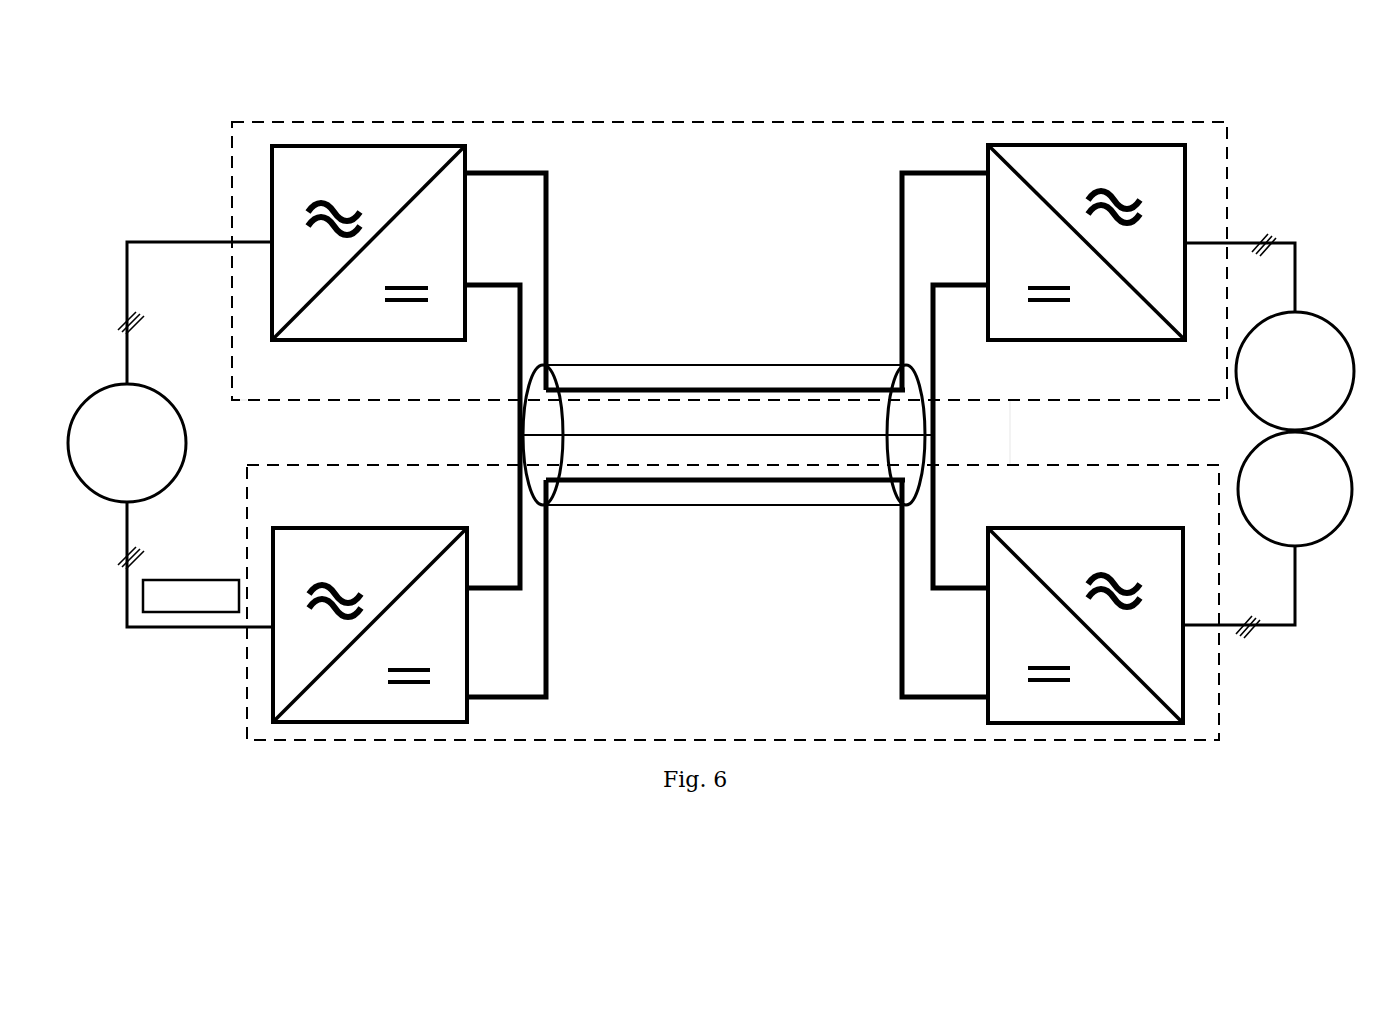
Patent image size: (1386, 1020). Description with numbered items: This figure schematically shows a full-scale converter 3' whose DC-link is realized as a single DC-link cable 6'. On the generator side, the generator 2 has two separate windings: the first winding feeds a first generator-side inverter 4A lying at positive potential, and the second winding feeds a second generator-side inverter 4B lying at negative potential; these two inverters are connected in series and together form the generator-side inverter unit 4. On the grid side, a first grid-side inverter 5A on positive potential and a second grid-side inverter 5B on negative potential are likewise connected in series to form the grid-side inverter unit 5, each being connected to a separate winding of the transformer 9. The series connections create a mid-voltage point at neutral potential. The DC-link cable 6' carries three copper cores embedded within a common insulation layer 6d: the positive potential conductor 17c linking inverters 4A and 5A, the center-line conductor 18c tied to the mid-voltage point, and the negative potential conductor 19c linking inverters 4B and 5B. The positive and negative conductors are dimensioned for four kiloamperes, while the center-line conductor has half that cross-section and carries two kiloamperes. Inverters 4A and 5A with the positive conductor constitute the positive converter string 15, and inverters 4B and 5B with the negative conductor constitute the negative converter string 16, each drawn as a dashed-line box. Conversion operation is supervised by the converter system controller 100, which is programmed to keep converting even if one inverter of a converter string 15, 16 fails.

The generator 2 is at (86, 484).
The full-scale converter 3' is at (729, 89).
The generator-side inverter unit 4 is at (403, 402).
The first generator-side inverter 4A is at (272, 178).
The second generator-side inverter 4B is at (273, 668).
The grid-side inverter unit 5 is at (1011, 402).
The first grid-side inverter 5A is at (1185, 174).
The second grid-side inverter 5B is at (1183, 672).
The DC-link cable 6' is at (724, 465).
The common insulation layer 6d is at (628, 492).
The transformer 9 is at (1333, 330).
The positive converter string 15 is at (1227, 124).
The negative converter string 16 is at (1219, 740).
The positive potential conductor 17c is at (688, 389).
The center-line conductor 18c is at (720, 434).
The negative potential conductor 19c is at (841, 482).
The converter system controller 100 is at (190, 580).